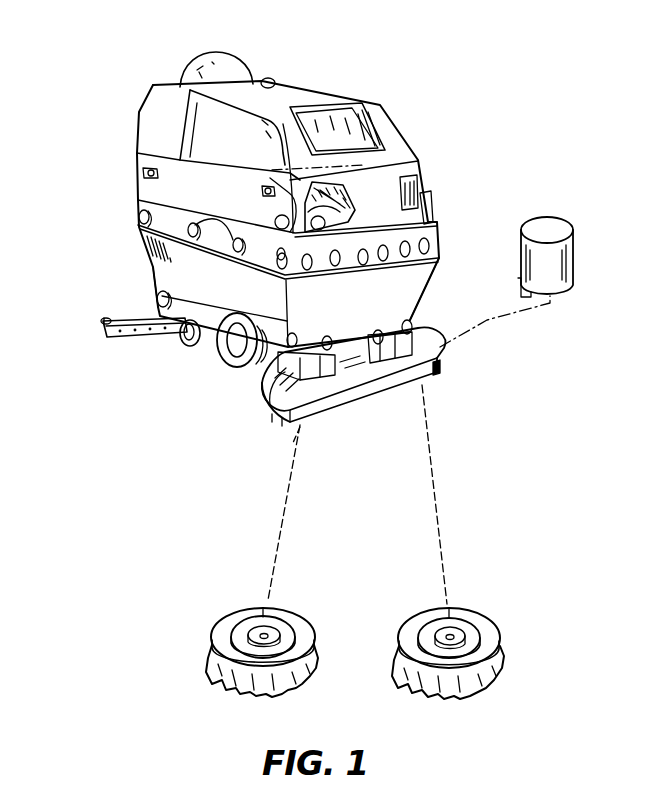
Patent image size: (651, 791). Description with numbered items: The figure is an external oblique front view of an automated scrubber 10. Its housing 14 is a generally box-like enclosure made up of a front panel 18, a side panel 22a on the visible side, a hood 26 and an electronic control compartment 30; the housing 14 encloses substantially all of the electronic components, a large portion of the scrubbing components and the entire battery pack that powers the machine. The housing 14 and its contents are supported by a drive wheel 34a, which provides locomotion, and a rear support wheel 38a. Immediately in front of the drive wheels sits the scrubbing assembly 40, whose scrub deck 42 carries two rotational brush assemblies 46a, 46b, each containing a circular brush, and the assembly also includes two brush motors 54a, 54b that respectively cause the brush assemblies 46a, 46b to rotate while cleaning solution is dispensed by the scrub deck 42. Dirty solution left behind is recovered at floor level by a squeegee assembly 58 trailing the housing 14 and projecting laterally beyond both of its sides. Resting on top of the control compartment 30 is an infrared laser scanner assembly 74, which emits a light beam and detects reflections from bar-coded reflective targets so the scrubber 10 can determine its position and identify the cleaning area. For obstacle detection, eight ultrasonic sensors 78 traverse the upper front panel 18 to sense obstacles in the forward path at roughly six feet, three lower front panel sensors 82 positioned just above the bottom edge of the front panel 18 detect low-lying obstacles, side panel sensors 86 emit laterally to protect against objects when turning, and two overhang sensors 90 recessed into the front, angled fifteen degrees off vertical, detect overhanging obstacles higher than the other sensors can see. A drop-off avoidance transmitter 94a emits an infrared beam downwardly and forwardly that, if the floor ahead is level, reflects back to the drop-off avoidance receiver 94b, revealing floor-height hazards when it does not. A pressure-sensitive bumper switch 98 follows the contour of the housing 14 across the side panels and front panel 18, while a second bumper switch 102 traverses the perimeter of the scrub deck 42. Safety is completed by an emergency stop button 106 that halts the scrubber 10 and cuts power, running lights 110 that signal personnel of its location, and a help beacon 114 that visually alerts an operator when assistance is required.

The automated scrubber 10 is at (414, 76).
The housing 14 is at (137, 178).
The front panel 18 is at (410, 318).
The side panel 22a is at (157, 274).
The hood 26 is at (314, 91).
The electronic control compartment 30 is at (148, 112).
The drive wheel 34a is at (221, 363).
The rear support wheel 38a is at (172, 347).
The scrubbing assembly 40 is at (466, 364).
The scrub deck 42 is at (337, 390).
The rotational brush assembly 46a is at (167, 606).
The rotational brush assembly 46b is at (512, 608).
The brush motor 54a is at (268, 407).
The brush motor 54b is at (580, 260).
The squeegee assembly 58 is at (103, 332).
The infrared laser scanner assembly 74 is at (214, 60).
The ultrasonic sensors 78 is at (312, 283).
The lower front panel sensors 82 is at (406, 327).
The side panel sensors 86 is at (137, 205).
The overhang sensors 90 is at (428, 220).
The drop-off avoidance transmitter 94a is at (345, 186).
The drop-off avoidance receiver 94b is at (420, 187).
The bumper switch 98 is at (138, 226).
The second bumper switch 102 is at (437, 377).
The emergency stop button 106 is at (293, 170).
The running lights 110 is at (136, 155).
The help beacon 114 is at (270, 78).